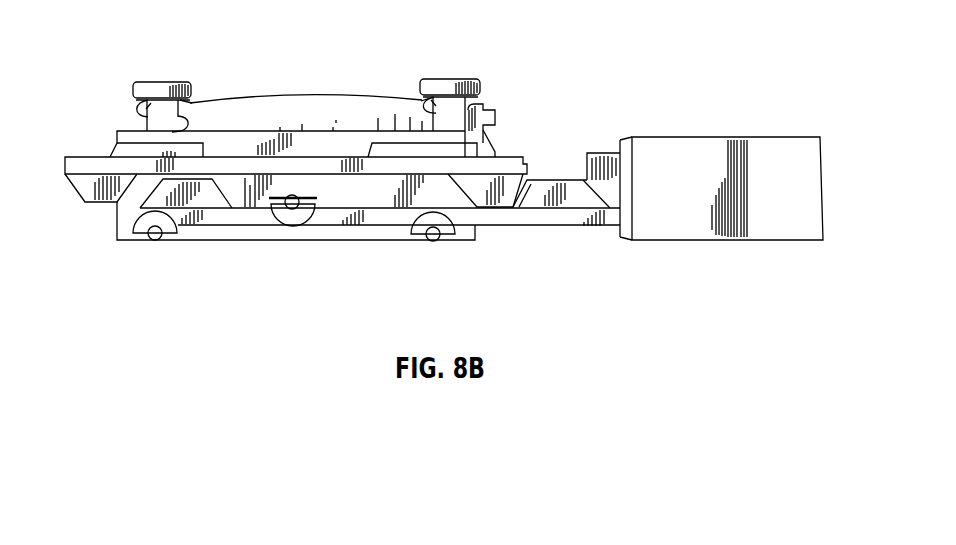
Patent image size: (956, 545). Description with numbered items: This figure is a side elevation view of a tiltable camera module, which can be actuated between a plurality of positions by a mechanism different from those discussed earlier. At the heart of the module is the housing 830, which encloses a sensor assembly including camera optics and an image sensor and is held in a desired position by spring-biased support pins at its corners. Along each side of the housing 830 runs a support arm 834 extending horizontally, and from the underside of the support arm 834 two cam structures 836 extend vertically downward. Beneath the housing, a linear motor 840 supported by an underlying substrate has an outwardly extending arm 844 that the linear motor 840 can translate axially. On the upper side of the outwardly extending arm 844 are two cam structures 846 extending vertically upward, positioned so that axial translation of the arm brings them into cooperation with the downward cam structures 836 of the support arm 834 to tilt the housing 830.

The housing 830 is at (247, 142).
The support arm 834 is at (335, 158).
The cam structure 836 is at (95, 200).
The linear motor 840 is at (768, 153).
The outwardly extending arm 844 is at (502, 217).
The cam structure 846 is at (202, 200).